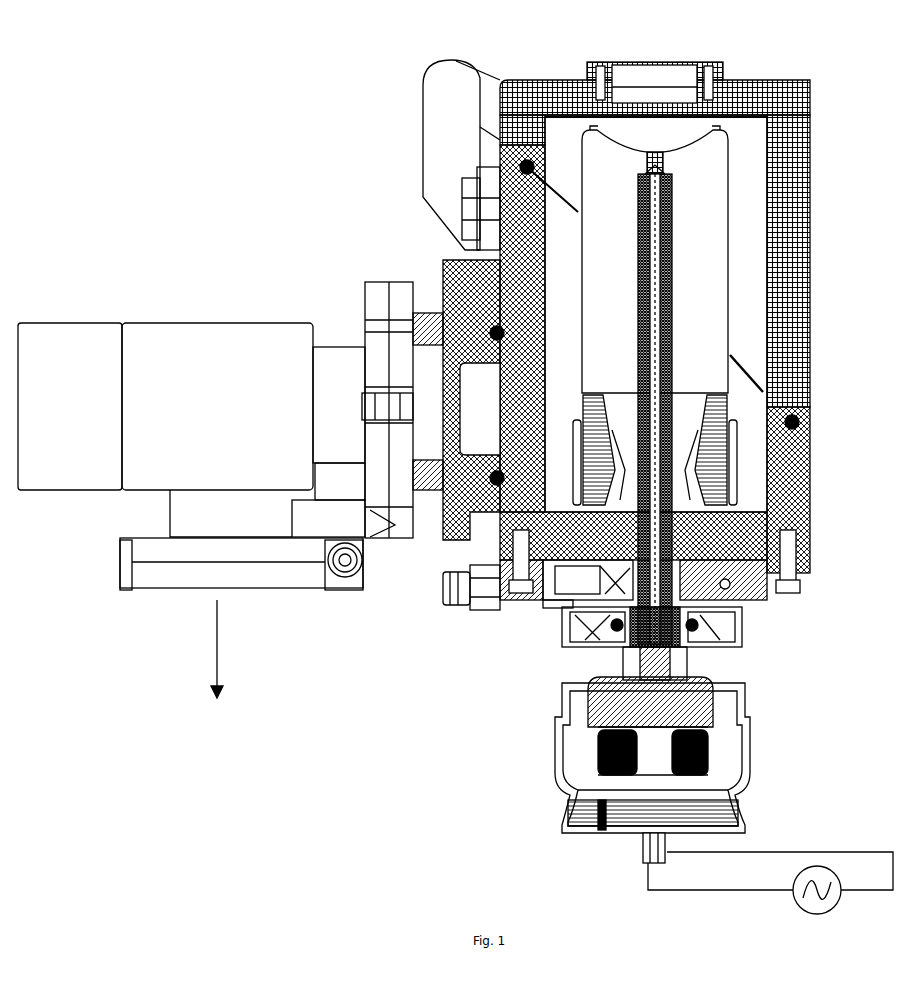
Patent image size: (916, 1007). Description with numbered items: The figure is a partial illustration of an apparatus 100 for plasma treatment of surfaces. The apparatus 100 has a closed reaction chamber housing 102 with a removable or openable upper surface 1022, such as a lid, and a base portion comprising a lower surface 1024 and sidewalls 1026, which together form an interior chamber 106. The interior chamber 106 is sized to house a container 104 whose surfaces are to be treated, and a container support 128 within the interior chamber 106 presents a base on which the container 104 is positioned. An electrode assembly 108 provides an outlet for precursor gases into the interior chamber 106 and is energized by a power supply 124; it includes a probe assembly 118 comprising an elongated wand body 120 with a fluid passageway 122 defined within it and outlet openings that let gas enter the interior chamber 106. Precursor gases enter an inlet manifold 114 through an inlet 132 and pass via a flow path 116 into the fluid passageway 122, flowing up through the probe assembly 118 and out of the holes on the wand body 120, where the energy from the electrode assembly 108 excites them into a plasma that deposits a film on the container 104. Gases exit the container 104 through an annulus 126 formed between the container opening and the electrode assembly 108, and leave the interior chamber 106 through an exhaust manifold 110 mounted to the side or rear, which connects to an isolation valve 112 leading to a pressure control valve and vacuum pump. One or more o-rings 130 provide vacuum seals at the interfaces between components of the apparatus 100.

The apparatus 100 is at (278, 107).
The reaction chamber housing 102 is at (540, 80).
The upper surface 1022 is at (800, 82).
The lower surface 1024 is at (813, 527).
The sidewalls 1026 is at (813, 457).
The container 104 is at (728, 265).
The interior chamber 106 is at (740, 317).
The electrode assembly 108 is at (750, 647).
The exhaust manifold 110 is at (470, 285).
The isolation valve 112 is at (180, 320).
The inlet manifold 114 is at (545, 603).
The flow path 116 is at (580, 657).
The probe assembly 118 is at (750, 673).
The wand body 120 is at (670, 195).
The fluid passageway 122 is at (672, 232).
The power supply 124 is at (772, 887).
The annulus 126 is at (620, 503).
The container support 128 is at (808, 560).
The o-rings 130 is at (470, 300).
The inlet 132 is at (437, 577).